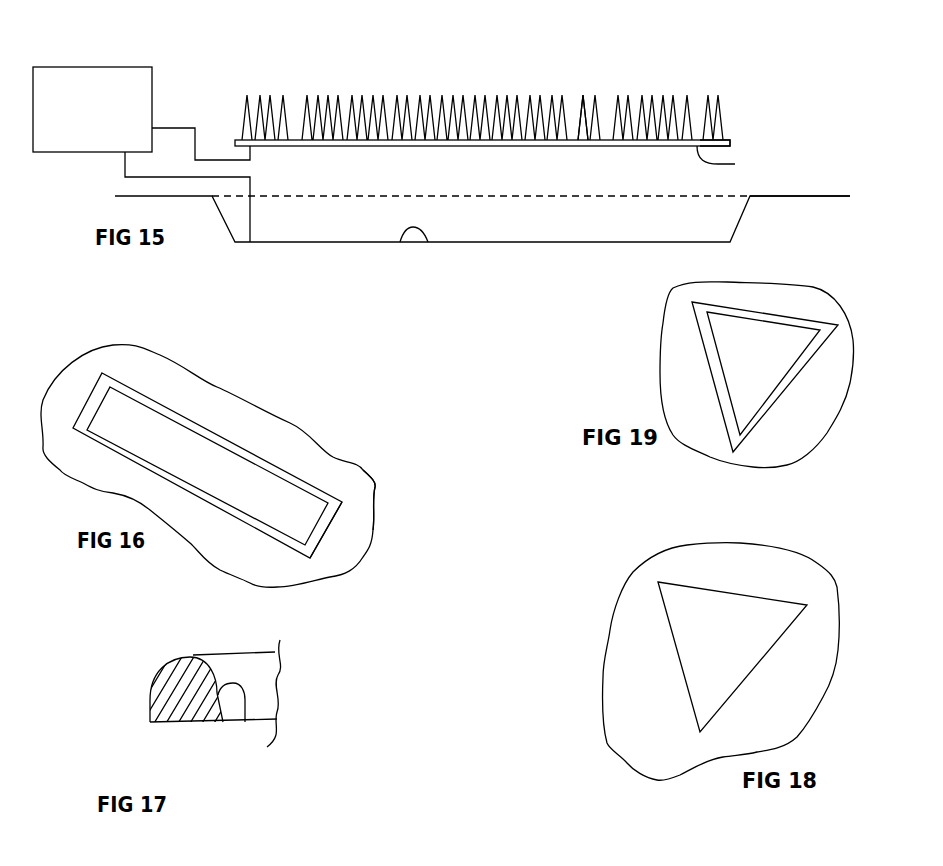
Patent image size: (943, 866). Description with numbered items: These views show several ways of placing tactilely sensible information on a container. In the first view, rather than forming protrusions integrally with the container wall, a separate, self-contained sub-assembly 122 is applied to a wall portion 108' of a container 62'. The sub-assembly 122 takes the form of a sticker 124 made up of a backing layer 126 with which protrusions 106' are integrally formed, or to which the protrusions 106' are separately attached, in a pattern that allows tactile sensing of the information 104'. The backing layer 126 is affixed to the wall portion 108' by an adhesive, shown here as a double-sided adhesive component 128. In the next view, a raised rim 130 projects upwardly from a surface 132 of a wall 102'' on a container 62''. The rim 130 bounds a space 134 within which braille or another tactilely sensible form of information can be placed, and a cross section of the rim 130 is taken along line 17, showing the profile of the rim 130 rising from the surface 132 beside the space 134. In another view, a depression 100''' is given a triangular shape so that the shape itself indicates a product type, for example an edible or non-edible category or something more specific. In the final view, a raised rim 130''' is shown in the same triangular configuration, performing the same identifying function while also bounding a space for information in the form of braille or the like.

In FIG. 15, the double-sided adhesive component 128 is at (92, 109).
In FIG. 15, the sub-assembly 122 is at (507, 150).
In FIG. 15, the information 104' is at (482, 75).
In FIG. 15, the protrusions 106' is at (614, 91).
In FIG. 15, the sticker 124 is at (735, 128).
In FIG. 15, the backing layer 126 is at (735, 164).
In FIG. 15, the container 62' is at (810, 167).
In FIG. 15, the wall portion 108' is at (400, 273).
In FIG. 16, the container 62'' is at (208, 444).
In FIG. 16, the raised rim 130 is at (265, 465).
In FIG. 17, the raised rim 130 is at (251, 693).
In FIG. 16, the space 134 is at (135, 453).
In FIG. 17, the space 134 is at (245, 722).
In FIG. 16, the wall 102'' is at (405, 482).
In FIG. 16, the surface 132 is at (352, 523).
In FIG. 16, the line 17- 17 is at (226, 420).
In FIG. 19, the raised rim 130''' is at (757, 356).
In FIG. 18, the depression 100''' is at (737, 650).